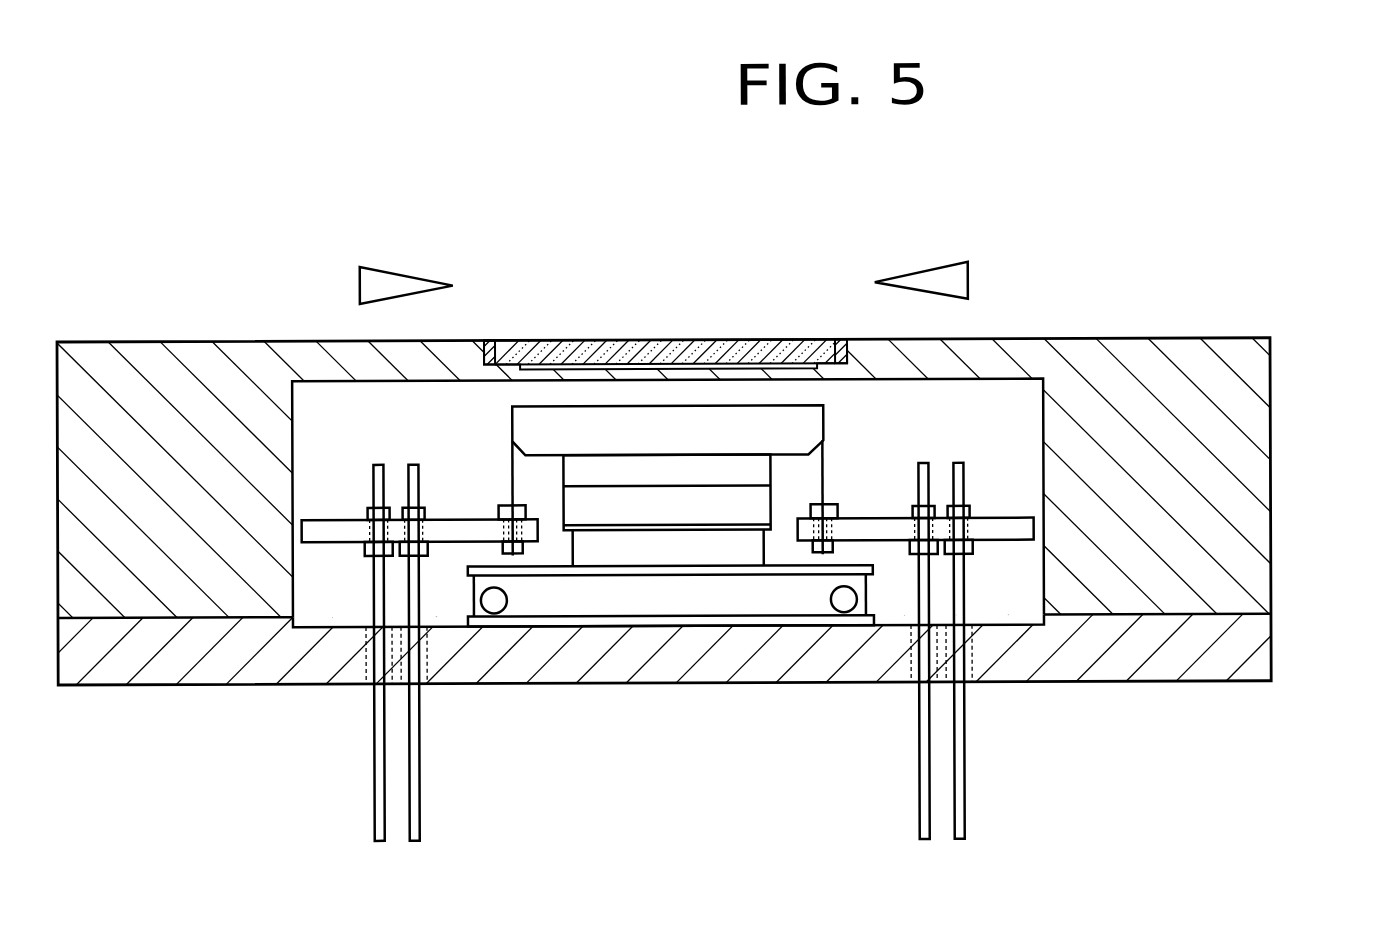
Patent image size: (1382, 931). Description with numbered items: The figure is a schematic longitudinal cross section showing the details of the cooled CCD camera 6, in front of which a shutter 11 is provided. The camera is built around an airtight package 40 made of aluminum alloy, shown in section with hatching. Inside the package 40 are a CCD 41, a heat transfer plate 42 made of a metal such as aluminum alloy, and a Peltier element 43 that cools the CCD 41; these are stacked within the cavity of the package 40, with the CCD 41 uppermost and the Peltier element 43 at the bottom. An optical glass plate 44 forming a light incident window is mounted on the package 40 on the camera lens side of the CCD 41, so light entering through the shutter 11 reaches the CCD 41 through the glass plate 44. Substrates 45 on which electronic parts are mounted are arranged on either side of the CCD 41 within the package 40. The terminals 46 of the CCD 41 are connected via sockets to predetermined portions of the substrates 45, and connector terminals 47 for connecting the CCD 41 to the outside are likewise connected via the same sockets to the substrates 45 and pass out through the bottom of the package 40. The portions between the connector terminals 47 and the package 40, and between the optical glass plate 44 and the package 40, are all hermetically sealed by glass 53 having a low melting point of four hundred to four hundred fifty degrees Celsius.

The cooled CCD camera 6 is at (1180, 325).
The shutter 11 is at (954, 270).
The airtight package 40 is at (1180, 493).
The CCD 41 is at (560, 435).
The heat transfer plate 42 is at (698, 476).
The Peltier element 43 is at (642, 596).
The optical glass plate 44 is at (657, 344).
The substrates 45 is at (333, 522).
The terminals 46 is at (510, 500).
The connector terminals 47 is at (965, 596).
The glass 53 is at (494, 343).